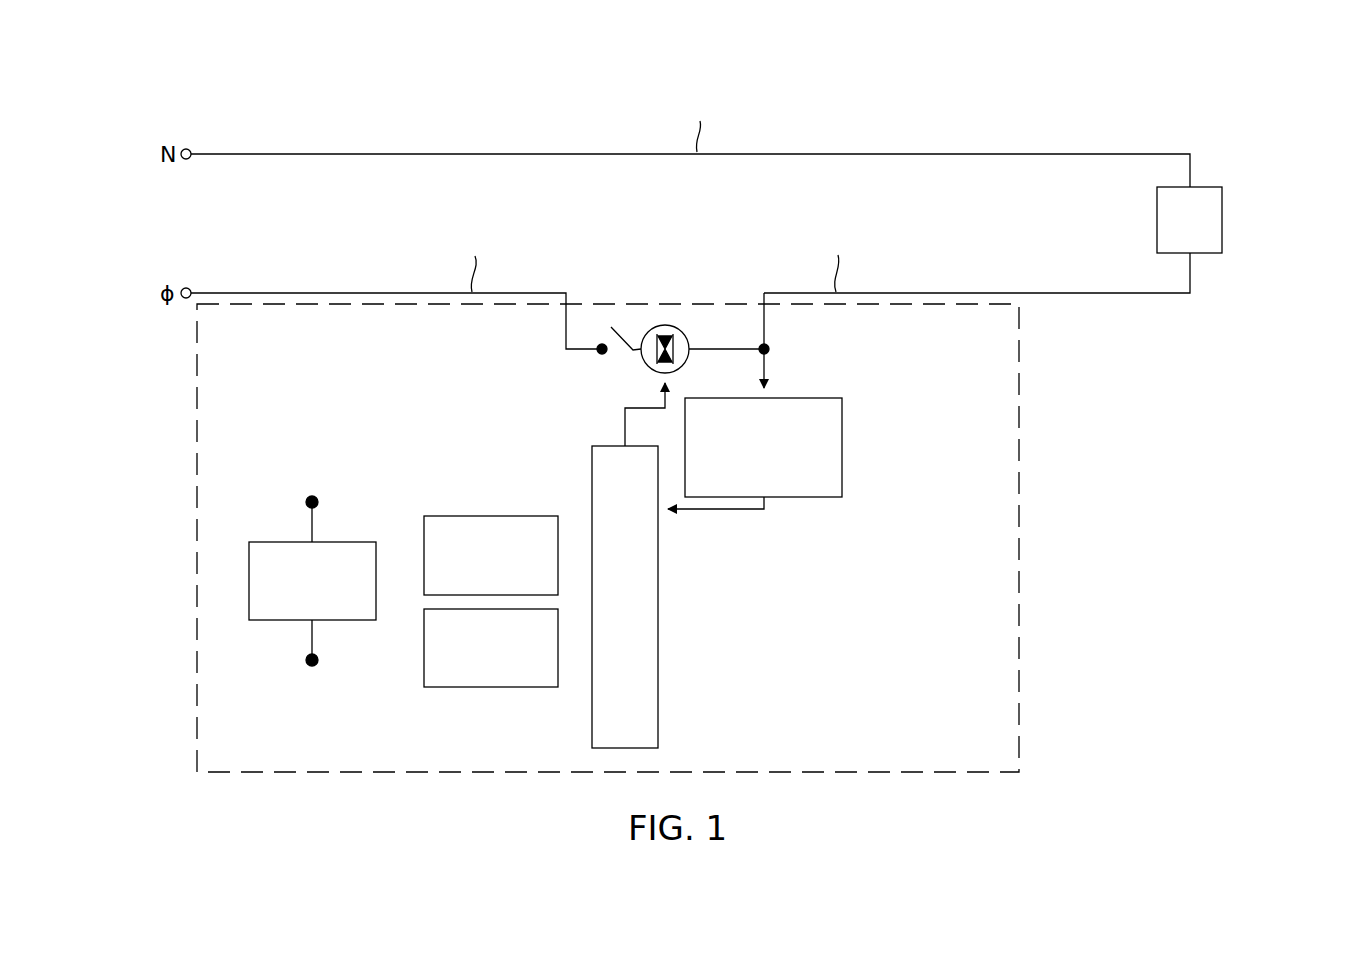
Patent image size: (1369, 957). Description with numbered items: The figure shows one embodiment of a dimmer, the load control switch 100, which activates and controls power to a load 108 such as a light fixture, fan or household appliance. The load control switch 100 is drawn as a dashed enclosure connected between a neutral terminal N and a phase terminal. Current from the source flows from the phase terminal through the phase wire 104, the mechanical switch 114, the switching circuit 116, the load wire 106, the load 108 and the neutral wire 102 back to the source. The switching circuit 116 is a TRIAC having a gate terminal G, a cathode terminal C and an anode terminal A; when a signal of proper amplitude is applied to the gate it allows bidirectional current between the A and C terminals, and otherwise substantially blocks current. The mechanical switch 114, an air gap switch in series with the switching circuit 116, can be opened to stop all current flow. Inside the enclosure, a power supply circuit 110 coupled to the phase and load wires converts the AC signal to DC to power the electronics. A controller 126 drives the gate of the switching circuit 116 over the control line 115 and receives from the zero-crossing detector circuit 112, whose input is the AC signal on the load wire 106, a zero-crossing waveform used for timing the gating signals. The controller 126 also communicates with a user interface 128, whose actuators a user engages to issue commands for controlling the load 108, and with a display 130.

The load control switch 100 is at (1019, 445).
The neutral wire 102 is at (385, 152).
The phase wire 104 is at (395, 292).
The load wire 106 is at (931, 292).
The load 108 is at (1222, 203).
The power supply circuit 110 is at (271, 541).
The zero-crossing detector circuit 112 is at (842, 440).
The mechanical switch 114 is at (582, 351).
The control line 115 is at (625, 430).
The switching circuit 116 is at (658, 325).
The controller 126 is at (658, 640).
The user interface 128 is at (470, 515).
The display 130 is at (492, 688).